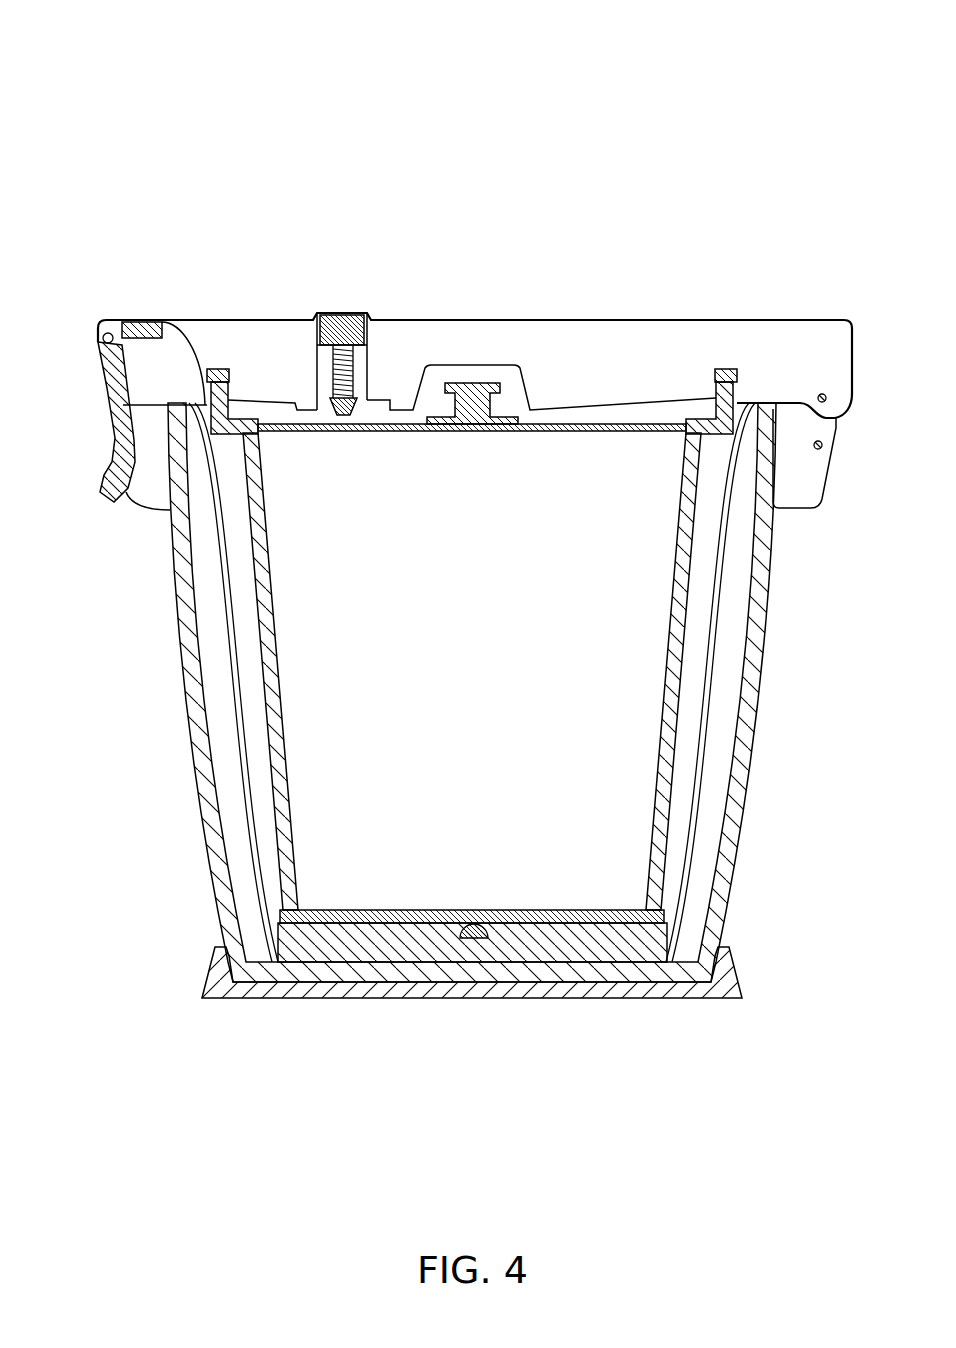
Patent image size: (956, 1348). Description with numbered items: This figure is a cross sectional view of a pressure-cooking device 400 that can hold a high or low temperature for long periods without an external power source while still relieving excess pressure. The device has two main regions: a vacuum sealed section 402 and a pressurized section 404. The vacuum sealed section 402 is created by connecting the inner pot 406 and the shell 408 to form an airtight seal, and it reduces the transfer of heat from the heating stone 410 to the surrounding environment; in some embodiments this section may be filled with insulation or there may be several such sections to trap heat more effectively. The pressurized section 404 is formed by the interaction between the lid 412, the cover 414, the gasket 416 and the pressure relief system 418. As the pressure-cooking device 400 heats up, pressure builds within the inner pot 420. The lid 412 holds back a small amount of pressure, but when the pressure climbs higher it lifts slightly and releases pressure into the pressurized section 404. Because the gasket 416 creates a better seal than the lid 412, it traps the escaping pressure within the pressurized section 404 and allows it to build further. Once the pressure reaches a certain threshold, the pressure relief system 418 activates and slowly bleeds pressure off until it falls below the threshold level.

The pressure-cooking device 400 is at (143, 83).
The vacuum sealed section 402 is at (203, 503).
The pressurized section 404 is at (607, 413).
The inner pot 406 is at (220, 630).
The shell 408 is at (180, 705).
The heating stone 410 is at (285, 925).
The lid 412 is at (317, 420).
The cover 414 is at (410, 317).
The gasket 416 is at (163, 320).
The pressure relief system 418 is at (292, 338).
The inner pot 420 is at (250, 567).